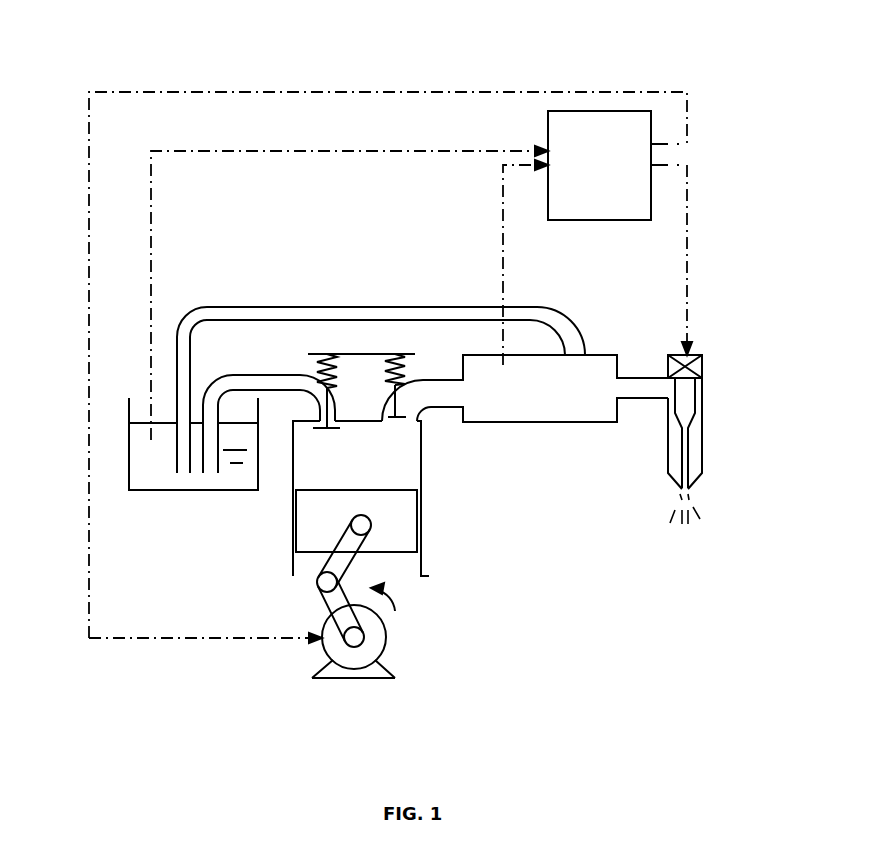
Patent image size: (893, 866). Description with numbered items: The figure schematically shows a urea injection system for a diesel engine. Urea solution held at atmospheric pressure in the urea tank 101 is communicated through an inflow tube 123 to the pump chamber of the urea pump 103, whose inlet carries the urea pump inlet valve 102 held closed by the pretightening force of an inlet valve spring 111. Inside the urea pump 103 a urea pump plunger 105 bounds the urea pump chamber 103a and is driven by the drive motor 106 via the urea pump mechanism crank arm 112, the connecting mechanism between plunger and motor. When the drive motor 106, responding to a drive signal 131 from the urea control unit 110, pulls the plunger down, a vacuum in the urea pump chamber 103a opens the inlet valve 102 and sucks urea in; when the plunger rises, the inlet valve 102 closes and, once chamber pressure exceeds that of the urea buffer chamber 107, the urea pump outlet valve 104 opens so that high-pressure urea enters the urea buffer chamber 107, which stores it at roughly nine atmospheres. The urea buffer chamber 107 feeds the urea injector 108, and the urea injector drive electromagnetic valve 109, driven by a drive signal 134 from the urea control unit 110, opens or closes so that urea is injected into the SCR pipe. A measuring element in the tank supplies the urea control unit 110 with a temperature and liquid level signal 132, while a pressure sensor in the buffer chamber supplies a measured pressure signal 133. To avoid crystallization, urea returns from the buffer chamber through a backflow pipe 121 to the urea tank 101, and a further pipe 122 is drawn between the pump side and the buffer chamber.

The urea tank 101 is at (193, 492).
The urea pump inlet valve 102 is at (320, 440).
The urea pump 103 is at (292, 532).
The urea pump chamber 103a is at (368, 480).
The urea pump outlet valve 104 is at (395, 423).
The urea pump plunger 105 is at (405, 525).
The drive motor 106 is at (377, 658).
The urea buffer chamber 107 is at (548, 406).
The urea injector 108 is at (682, 457).
The urea injector drive electromagnetic valve 109 is at (670, 363).
The urea control unit (DCU) 110 is at (588, 111).
The inlet valve spring 111 is at (328, 370).
The urea pump mechanism crank arm 112 is at (320, 598).
The backflow pipe 121 is at (208, 306).
The fuel pipe to exhaust unit 122 is at (560, 310).
The inflow tube 123 is at (225, 390).
The drive signal 131 is at (260, 90).
The urea tank temperature and liquid level signal 132 is at (151, 263).
The measured signal of the pressure in the urea buffer chamber 133 is at (503, 272).
The drive signal 134 is at (687, 248).